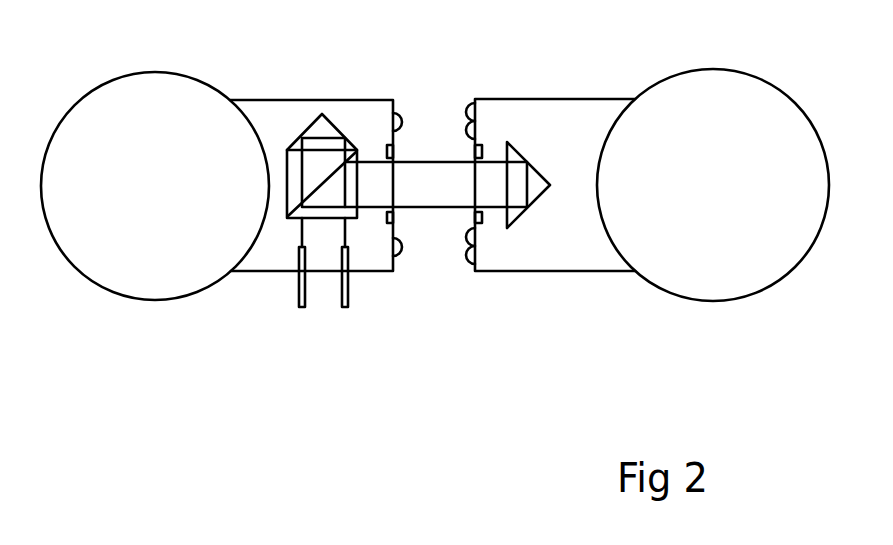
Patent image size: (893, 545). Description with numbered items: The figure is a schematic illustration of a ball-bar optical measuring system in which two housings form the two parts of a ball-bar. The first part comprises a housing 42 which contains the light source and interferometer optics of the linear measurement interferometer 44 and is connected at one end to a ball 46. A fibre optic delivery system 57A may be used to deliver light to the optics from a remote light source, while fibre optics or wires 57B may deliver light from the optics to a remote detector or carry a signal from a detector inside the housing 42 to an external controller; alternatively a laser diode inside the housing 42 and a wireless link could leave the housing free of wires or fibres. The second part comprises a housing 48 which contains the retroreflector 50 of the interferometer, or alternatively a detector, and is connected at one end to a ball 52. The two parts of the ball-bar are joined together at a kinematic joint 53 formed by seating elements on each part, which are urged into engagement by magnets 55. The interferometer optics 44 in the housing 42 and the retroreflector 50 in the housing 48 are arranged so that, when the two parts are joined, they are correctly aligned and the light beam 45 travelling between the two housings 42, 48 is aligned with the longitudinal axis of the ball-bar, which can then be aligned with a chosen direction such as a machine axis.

The housing 42 is at (282, 110).
The linear measurement interferometer 44 is at (345, 133).
The light beam 45 is at (430, 155).
The ball 46 is at (145, 88).
The housing 48 is at (562, 108).
The retroreflector 50 is at (525, 223).
The ball 52 is at (725, 278).
The kinematic joint 53 is at (405, 262).
The magnets 55 is at (389, 221).
The fibre optic delivery system 57A is at (298, 315).
The fibre optics or wires 57B is at (345, 312).